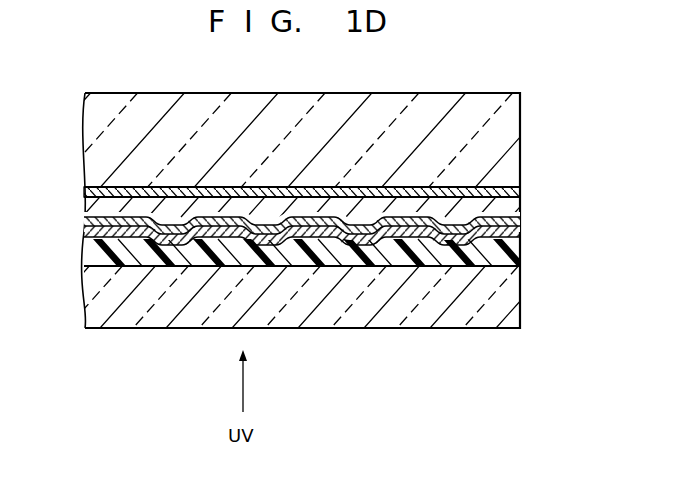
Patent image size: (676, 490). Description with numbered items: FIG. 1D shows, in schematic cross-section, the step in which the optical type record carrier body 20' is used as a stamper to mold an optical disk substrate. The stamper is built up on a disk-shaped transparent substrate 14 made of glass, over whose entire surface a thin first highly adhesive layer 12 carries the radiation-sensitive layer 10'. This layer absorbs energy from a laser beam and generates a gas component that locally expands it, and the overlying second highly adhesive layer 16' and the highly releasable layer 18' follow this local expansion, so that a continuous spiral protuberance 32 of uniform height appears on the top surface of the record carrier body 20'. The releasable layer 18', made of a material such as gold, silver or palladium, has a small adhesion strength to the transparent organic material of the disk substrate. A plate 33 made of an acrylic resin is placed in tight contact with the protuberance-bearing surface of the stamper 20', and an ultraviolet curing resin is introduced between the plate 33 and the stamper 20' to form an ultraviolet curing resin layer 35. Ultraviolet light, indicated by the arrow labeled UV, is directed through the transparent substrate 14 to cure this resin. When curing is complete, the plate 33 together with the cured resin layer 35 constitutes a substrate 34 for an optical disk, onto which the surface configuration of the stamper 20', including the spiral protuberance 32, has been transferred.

The transparent substrate 14 is at (457, 95).
The first highly adhesive layer 12 is at (522, 190).
The radiation-sensitive layer 10' is at (329, 205).
The second highly adhesive layer 16' is at (330, 223).
The highly releasable layer 18' is at (274, 234).
The ultraviolet curing resin layer 35 is at (85, 256).
The continuous spiral protuberance 32 is at (368, 243).
The substrate for an optical disk 34 is at (527, 288).
The plate 33 is at (492, 322).
The record carrier body 20' is at (335, 210).